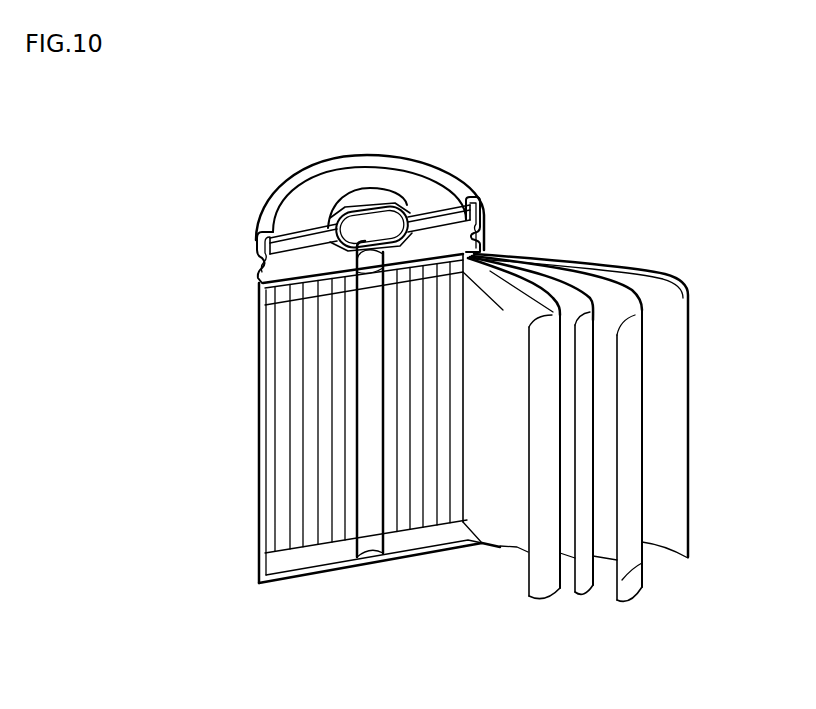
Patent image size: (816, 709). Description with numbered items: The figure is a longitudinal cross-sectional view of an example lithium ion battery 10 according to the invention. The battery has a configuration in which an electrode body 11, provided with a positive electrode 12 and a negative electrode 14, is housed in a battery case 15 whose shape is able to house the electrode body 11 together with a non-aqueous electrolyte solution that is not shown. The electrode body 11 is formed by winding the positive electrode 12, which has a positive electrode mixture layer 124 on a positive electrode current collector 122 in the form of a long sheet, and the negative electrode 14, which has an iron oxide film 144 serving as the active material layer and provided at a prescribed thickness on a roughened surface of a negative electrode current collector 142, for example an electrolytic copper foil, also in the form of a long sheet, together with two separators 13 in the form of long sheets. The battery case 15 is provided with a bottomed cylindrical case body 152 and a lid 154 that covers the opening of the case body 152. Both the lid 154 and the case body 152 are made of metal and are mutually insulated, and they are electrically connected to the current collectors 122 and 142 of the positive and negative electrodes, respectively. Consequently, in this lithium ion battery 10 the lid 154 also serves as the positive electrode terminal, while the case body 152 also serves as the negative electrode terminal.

The lithium ion battery 10 is at (552, 132).
The electrode body 11 is at (278, 495).
The positive electrode 12 is at (528, 602).
The positive electrode current collector 122 is at (515, 262).
The positive electrode mixture layer 124 is at (535, 290).
The separator 13 is at (672, 272).
The negative electrode 14 is at (617, 603).
The negative electrode current collector 142 is at (637, 597).
The iron oxide film 144 is at (630, 563).
The battery case 15 is at (258, 380).
The case body 152 is at (362, 562).
The lid 154 is at (373, 202).